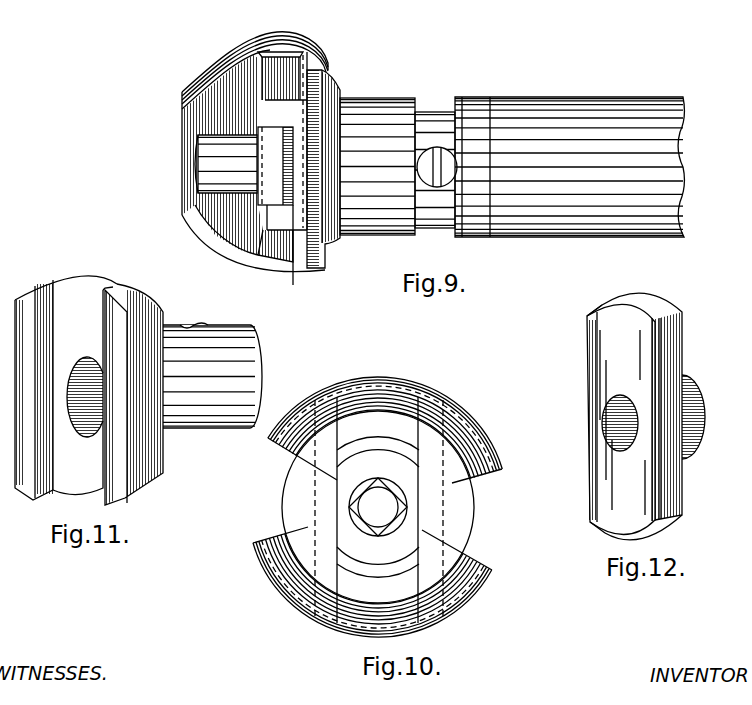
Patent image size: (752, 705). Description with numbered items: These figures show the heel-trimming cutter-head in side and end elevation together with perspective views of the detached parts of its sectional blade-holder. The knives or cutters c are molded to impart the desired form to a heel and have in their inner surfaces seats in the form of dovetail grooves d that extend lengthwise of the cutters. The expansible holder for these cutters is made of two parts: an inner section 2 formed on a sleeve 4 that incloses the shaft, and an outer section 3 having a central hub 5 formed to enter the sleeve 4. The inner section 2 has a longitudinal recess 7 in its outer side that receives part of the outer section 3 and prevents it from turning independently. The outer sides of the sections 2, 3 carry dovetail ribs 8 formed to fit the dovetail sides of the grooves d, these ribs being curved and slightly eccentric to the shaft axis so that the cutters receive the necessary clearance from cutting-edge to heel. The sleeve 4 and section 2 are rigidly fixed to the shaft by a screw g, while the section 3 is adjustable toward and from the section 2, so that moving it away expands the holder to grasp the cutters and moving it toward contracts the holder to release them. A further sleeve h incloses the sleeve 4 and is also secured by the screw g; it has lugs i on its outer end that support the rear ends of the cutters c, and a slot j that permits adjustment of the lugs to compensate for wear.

In FIG. 9, the knives or cutters c is at (222, 74).
In FIG. 10, the knives or cutters c is at (472, 420).
In FIG. 9, the dovetail grooves d is at (297, 52).
In FIG. 9, the lugs i is at (311, 88).
In FIG. 10, the lugs i is at (283, 455).
In FIG. 9, the sleeve h is at (378, 97).
In FIG. 10, the sleeve h is at (297, 508).
In FIG. 9, the slot j is at (427, 146).
In FIG. 9, the screw g is at (426, 153).
In FIG. 9, the section 2 is at (296, 259).
In FIG. 11, the section 2 is at (115, 283).
In FIG. 9, the section 3 is at (275, 167).
In FIG. 12, the section 3 is at (634, 416).
In FIG. 11, the sleeve 4 is at (238, 336).
In FIG. 12, the central hub 5 is at (697, 412).
In FIG. 9, the longitudinal recess 7 is at (282, 207).
In FIG. 11, the longitudinal recess 7 is at (63, 303).
In FIG. 11, the dovetail ribs 8 is at (160, 315).
In FIG. 12, the dovetail ribs 8 is at (585, 316).